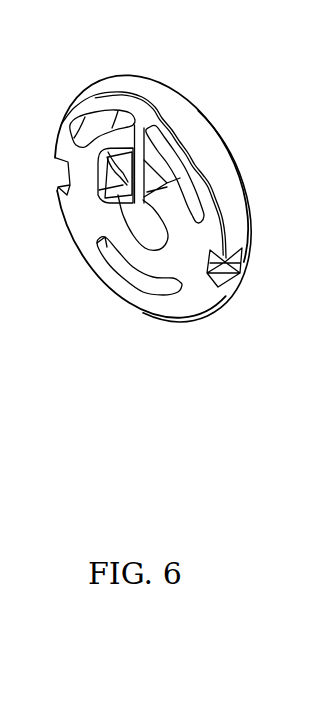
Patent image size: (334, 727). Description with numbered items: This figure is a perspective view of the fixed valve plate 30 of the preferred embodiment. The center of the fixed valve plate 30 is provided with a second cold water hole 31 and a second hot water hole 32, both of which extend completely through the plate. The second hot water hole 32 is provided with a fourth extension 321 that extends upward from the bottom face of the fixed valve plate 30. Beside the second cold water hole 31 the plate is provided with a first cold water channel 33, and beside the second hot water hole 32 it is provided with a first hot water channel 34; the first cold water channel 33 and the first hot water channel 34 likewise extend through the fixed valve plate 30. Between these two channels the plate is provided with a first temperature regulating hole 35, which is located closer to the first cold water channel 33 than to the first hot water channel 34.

The fixed valve plate 30 is at (236, 298).
The second cold water hole 31 is at (172, 207).
The second hot water hole 32 is at (123, 222).
The fourth extension 321 is at (124, 140).
The first cold water channel 33 is at (182, 158).
The first hot water channel 34 is at (123, 276).
The first temperature regulating hole 35 is at (70, 124).